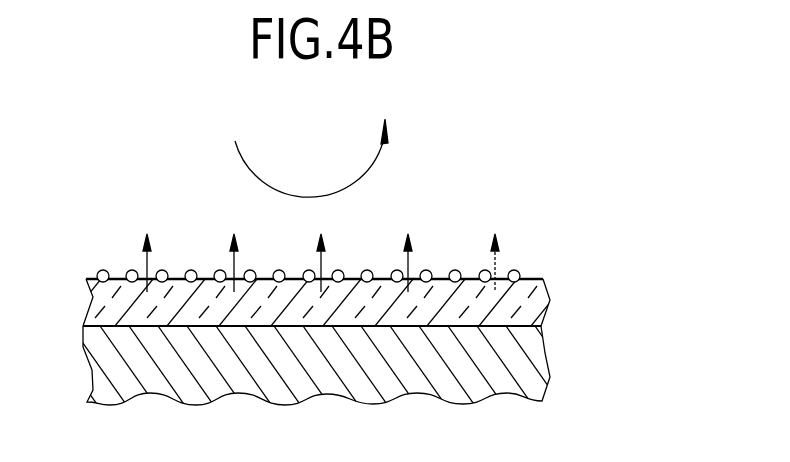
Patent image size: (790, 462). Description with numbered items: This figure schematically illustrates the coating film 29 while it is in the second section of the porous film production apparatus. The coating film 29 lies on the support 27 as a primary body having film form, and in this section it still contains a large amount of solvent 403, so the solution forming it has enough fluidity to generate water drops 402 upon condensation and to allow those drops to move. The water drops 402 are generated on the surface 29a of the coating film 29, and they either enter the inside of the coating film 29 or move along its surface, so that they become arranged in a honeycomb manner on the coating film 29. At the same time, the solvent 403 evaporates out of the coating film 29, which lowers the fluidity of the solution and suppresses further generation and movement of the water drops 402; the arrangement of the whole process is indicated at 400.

The support 27 is at (535, 378).
The coating film 29 is at (560, 303).
The surface of the coating film 29a is at (528, 278).
The laser irradiation 400 is at (308, 198).
The water drops 402 is at (188, 275).
The solvent 403 is at (500, 268).